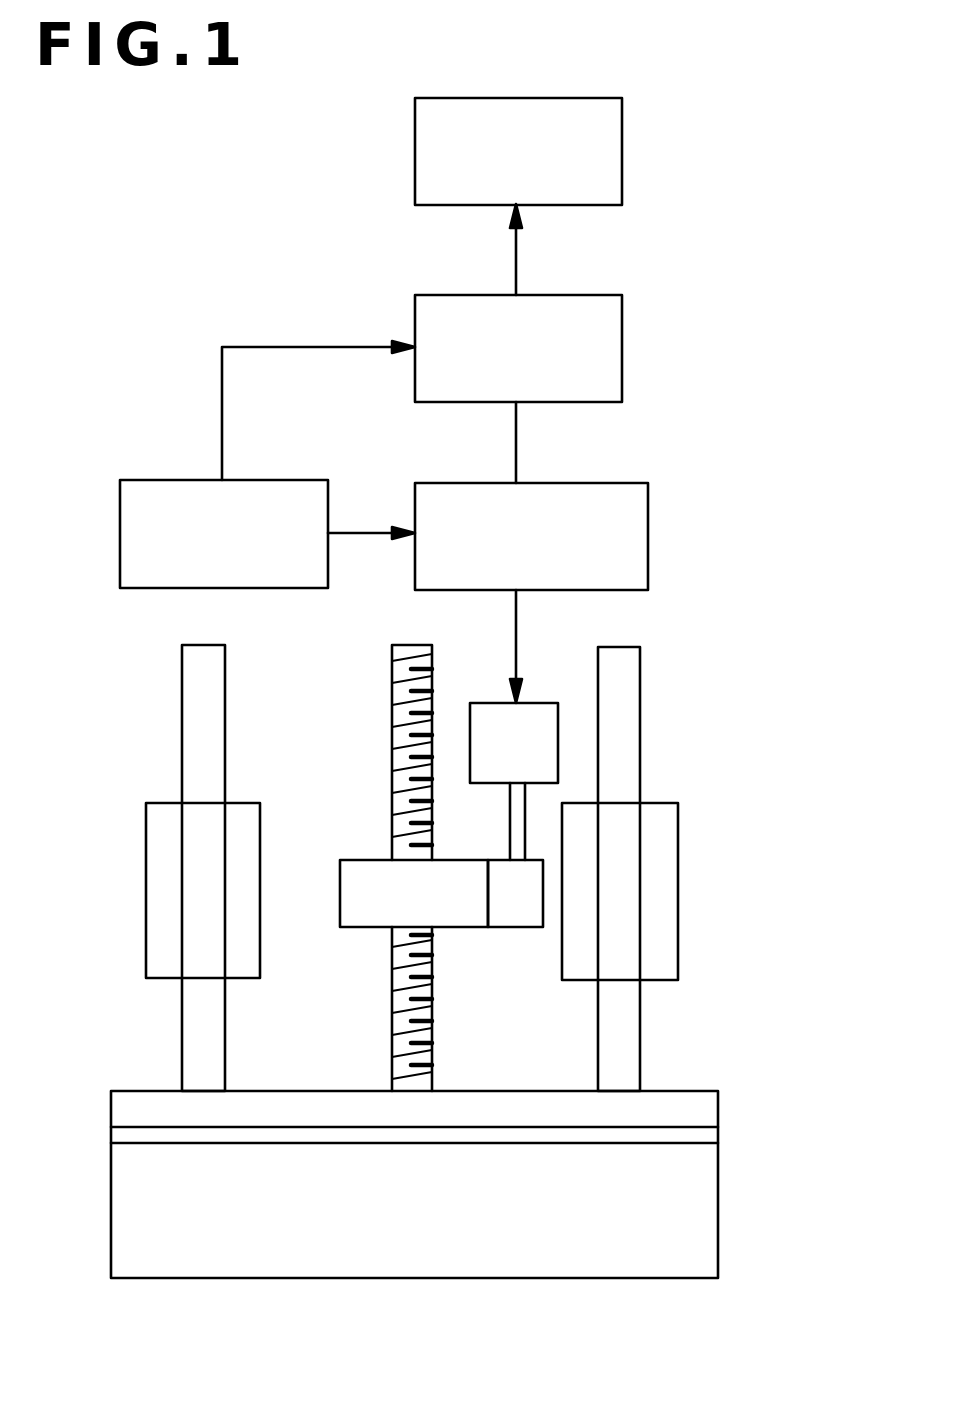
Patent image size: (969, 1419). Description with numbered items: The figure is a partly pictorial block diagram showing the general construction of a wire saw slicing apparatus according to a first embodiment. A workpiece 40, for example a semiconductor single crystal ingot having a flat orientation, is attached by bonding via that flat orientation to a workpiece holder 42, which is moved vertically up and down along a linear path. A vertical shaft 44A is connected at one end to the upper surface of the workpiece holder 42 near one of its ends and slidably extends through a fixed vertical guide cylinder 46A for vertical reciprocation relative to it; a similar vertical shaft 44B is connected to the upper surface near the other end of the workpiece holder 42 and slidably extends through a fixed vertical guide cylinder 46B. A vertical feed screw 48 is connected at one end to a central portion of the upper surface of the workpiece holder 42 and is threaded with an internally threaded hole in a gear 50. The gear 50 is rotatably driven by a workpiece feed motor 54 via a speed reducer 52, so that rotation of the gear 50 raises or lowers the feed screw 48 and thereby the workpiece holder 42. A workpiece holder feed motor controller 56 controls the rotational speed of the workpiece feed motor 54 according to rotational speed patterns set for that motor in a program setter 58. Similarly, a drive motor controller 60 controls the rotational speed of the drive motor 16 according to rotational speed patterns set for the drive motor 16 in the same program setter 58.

The drive motor 16 is at (622, 177).
The drive motor controller 60 is at (622, 372).
The program setter 58 is at (290, 484).
The workpiece holder feed motor controller 56 is at (648, 528).
The workpiece feed motor 54 is at (544, 700).
The vertical shaft 44A is at (215, 1043).
The vertical shaft 44B is at (640, 1050).
The fixed vertical guide cylinder 46A is at (146, 847).
The fixed vertical guide cylinder 46B is at (678, 855).
The vertical feed screw 48 is at (432, 1050).
The gear 50 is at (465, 927).
The speed reducer 52 is at (522, 928).
The workpiece 40 is at (690, 1270).
The workpiece holder 42 is at (715, 1112).